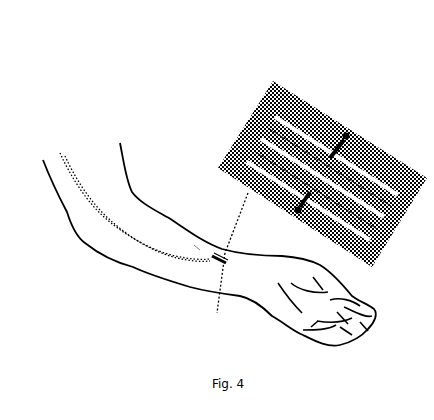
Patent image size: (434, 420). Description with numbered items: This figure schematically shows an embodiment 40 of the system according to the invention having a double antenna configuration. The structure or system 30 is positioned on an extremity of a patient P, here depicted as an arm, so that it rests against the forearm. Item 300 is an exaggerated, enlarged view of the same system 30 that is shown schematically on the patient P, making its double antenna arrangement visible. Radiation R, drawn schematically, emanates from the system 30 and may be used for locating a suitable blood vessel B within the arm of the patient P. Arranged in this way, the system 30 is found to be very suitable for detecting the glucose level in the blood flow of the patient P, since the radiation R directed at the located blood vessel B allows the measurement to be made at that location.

The wearable sensing arrangement on forearm 40 is at (104, 68).
The exaggerated view of the system 300 is at (285, 91).
The system 30 is at (212, 260).
The patient P is at (197, 248).
The radiation R is at (237, 213).
The blood vessel B is at (216, 293).